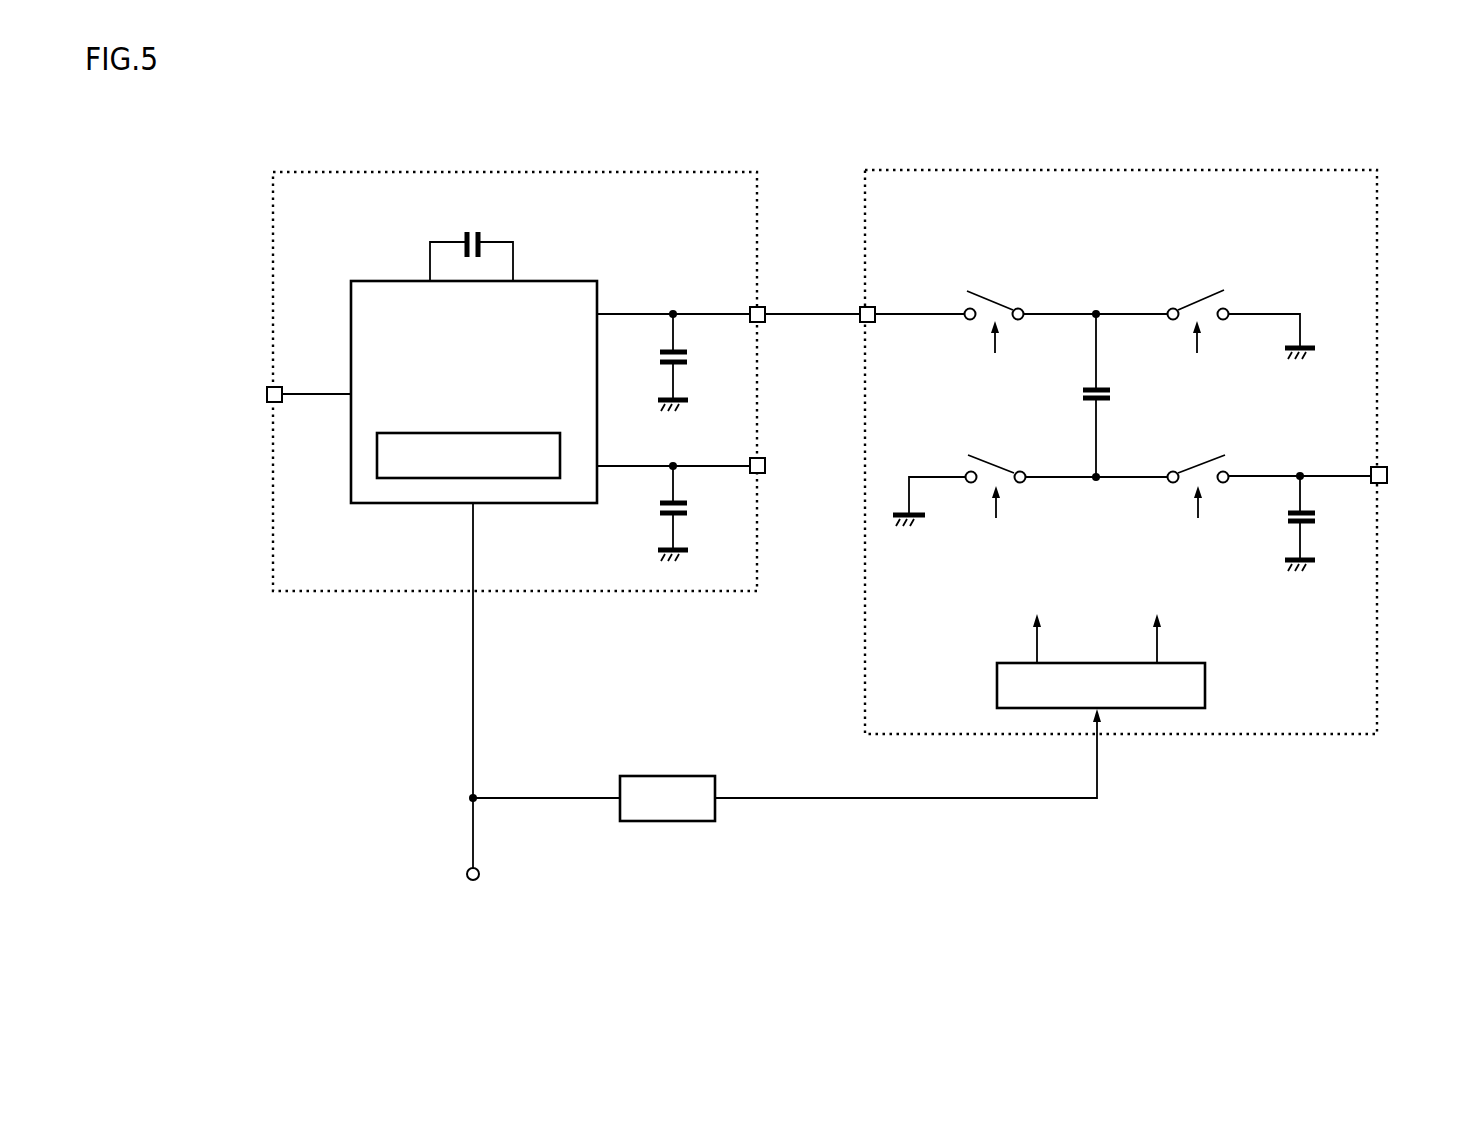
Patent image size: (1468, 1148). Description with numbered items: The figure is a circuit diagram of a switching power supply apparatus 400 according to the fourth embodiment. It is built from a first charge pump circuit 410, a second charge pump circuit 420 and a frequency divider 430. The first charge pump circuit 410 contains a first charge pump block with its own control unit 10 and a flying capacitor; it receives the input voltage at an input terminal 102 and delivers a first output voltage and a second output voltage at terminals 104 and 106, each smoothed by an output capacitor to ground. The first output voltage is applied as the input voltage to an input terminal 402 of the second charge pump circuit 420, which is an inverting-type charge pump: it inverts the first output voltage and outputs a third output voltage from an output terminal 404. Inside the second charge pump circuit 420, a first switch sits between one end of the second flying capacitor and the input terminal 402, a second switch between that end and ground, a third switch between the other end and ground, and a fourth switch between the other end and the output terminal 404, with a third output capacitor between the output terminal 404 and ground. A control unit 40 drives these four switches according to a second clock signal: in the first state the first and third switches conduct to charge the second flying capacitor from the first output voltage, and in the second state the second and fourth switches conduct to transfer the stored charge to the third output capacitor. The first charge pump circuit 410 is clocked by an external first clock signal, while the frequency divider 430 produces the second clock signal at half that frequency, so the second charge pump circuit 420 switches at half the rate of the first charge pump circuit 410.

The switching power supply apparatus 400 is at (847, 955).
The first charge pump circuit 410 is at (615, 592).
The second charge pump circuit 420 is at (1238, 735).
The frequency divider 430 is at (670, 776).
The control unit 10 is at (500, 432).
The control unit 40 is at (1206, 684).
The input terminal 102 is at (272, 386).
The first output terminal 104 is at (763, 306).
The second output terminal 106 is at (763, 474).
The input terminal 402 is at (862, 323).
The output terminal 404 is at (1380, 466).